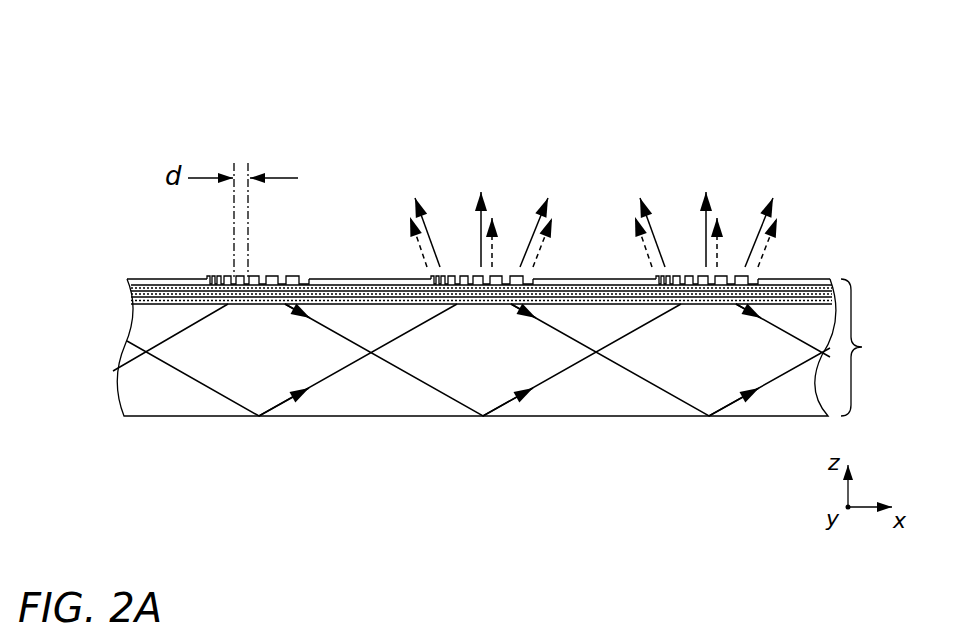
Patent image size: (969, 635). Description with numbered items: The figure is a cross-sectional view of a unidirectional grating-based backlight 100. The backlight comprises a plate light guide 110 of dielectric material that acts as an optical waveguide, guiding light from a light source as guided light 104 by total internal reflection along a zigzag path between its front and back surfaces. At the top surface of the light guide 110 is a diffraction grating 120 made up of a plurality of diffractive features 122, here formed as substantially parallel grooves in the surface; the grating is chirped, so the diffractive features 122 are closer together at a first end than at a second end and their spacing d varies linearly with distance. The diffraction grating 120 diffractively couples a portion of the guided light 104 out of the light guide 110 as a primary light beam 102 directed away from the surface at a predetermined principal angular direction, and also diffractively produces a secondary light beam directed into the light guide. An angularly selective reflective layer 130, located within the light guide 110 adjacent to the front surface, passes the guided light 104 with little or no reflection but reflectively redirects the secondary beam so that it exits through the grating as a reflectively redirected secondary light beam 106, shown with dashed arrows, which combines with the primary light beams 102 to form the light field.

The unidirectional grating-based backlight 100 is at (488, 258).
The primary light beam 102 is at (498, 175).
The guided light 104 is at (317, 393).
The reflectively redirected secondary light beam 106 is at (510, 208).
The light guide 110 is at (519, 347).
The diffraction grating 120 is at (483, 218).
The diffractive features 122 is at (270, 275).
The angularly selective reflective layer 130 is at (157, 310).